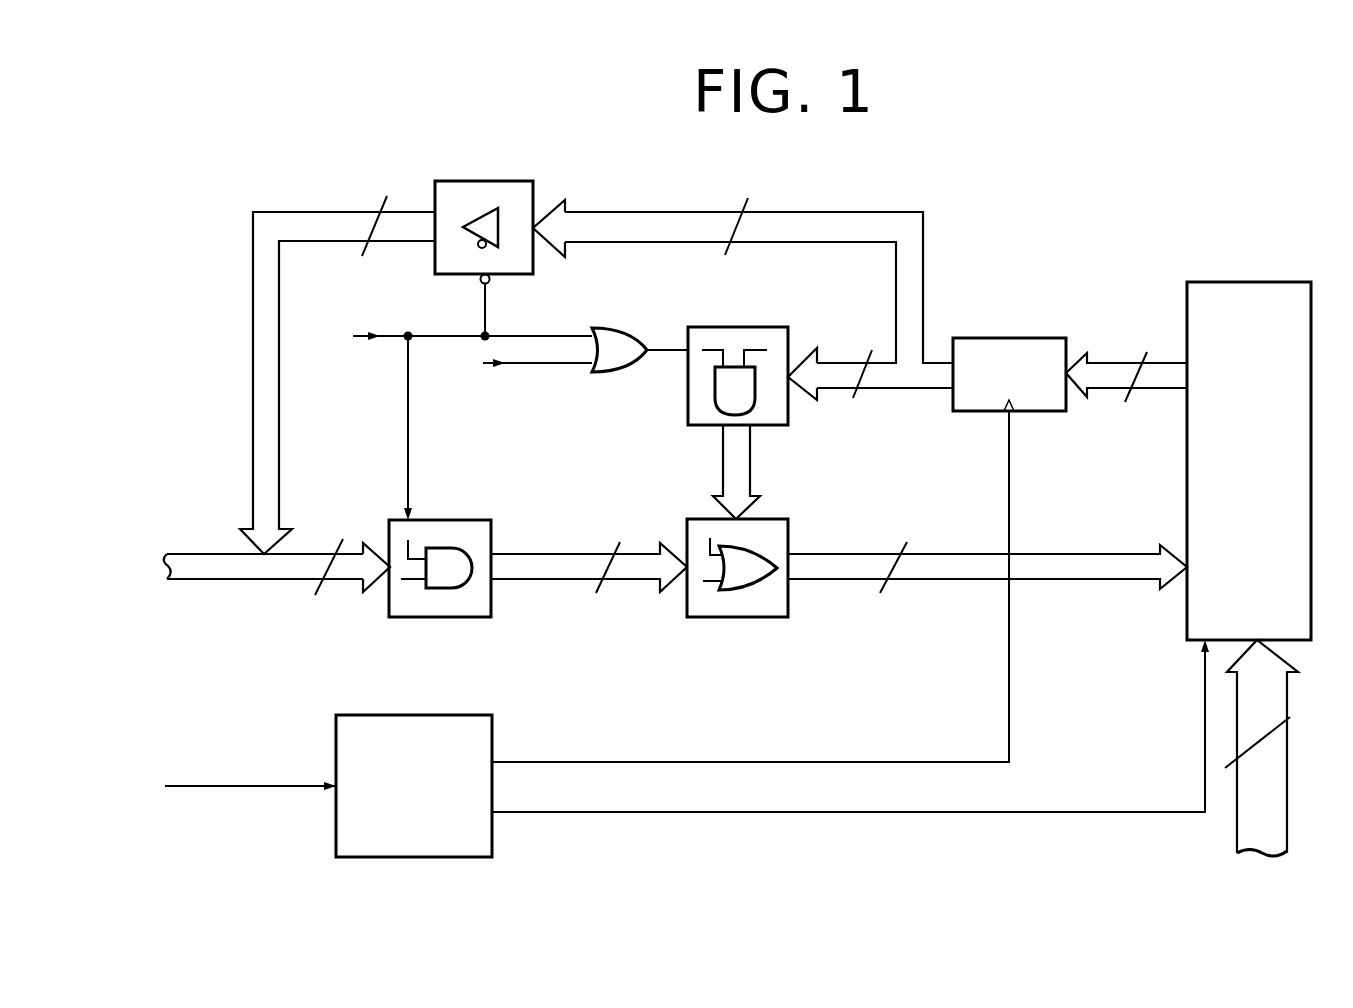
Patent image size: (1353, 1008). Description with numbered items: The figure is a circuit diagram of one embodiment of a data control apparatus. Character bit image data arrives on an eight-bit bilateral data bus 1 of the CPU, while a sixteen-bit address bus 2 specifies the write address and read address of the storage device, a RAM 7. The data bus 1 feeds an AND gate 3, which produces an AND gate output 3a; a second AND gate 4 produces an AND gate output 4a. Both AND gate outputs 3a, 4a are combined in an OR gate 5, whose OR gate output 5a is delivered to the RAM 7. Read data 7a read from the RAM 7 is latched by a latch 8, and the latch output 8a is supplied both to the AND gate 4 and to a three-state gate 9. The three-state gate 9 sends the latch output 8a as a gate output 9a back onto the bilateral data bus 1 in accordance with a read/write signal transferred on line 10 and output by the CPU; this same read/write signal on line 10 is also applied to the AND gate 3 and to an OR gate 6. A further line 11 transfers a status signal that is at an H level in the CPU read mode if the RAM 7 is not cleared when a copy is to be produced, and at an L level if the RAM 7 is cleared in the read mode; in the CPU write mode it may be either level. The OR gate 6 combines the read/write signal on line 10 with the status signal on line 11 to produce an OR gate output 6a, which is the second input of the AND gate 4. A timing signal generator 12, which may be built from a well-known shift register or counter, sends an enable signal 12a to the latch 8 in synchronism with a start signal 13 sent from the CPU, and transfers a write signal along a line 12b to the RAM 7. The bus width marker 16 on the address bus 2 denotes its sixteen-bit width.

The bilateral data bus 1 is at (195, 579).
The address bus 2 is at (1237, 828).
The AND gate 3 is at (440, 617).
The AND gate output 3a is at (534, 554).
The AND gate 4 is at (688, 398).
The AND gate output 4a is at (750, 457).
The OR gate 5 is at (745, 617).
The OR gate output 5a is at (928, 580).
The OR gate 6 is at (606, 330).
The OR gate output 6a is at (665, 349).
The RAM 7 is at (1238, 282).
The read data 7a is at (1098, 363).
The latch 8 is at (1004, 338).
The latch output 8a is at (930, 389).
The three-state gate 9 is at (480, 181).
The gate output 9a is at (279, 291).
The line 10 is at (389, 336).
The line 11 is at (538, 363).
The timing signal generator 12 is at (350, 715).
The enable signal 12a is at (561, 762).
The line 12b is at (568, 812).
The start signal 13 is at (246, 786).
The address bus width indicator 16 is at (1274, 733).